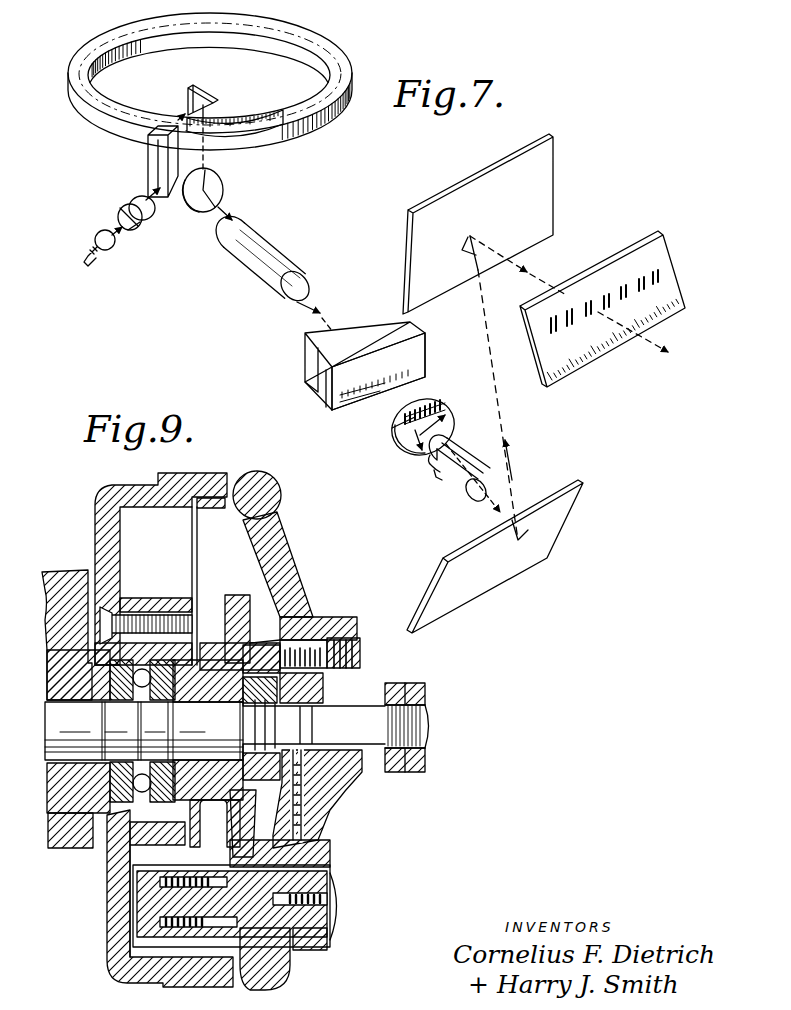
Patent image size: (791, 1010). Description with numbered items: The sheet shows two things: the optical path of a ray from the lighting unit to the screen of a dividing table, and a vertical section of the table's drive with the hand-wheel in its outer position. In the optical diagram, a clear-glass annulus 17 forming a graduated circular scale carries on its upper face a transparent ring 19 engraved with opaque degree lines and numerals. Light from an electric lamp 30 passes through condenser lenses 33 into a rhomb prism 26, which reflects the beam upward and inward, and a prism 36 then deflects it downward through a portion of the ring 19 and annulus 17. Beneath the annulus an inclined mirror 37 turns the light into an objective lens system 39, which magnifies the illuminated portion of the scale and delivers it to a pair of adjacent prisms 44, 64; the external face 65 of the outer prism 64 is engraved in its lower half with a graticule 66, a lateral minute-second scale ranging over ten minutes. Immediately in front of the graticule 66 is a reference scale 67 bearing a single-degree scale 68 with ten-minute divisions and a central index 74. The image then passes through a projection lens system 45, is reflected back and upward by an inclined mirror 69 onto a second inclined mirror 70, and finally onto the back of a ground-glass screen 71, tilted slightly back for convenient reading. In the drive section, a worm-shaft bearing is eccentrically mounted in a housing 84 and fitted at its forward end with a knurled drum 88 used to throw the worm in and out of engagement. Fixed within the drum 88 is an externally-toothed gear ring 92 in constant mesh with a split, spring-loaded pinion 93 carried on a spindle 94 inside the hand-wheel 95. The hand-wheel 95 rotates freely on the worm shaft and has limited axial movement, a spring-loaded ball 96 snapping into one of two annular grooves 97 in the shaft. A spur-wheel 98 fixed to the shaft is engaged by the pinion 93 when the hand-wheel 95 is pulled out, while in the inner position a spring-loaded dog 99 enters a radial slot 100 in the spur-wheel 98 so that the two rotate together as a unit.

In FIG. 7, the clear-glass annulus 17 is at (293, 130).
In FIG. 7, the transparent ring 19 is at (238, 120).
In FIG. 7, the rhomb prism 26 is at (148, 162).
In FIG. 7, the electric lamp 30 is at (106, 253).
In FIG. 7, the condenser lenses 33 is at (135, 232).
In FIG. 7, the prism 36 is at (190, 98).
In FIG. 7, the inclined mirror 37 is at (190, 212).
In FIG. 7, the objective lens system 39 is at (254, 272).
In FIG. 7, the prism 44 is at (305, 372).
In FIG. 7, the projection lens system 45 is at (445, 482).
In FIG. 7, the outer prism 64 is at (348, 395).
In FIG. 7, the external face 65 is at (335, 385).
In FIG. 7, the graticule 66 is at (360, 403).
In FIG. 7, the reference scale 67 is at (430, 402).
In FIG. 7, the single-degree scale 68 is at (449, 420).
In FIG. 7, the inclined mirror 69 is at (435, 583).
In FIG. 7, the second inclined mirror 70 is at (418, 245).
In FIG. 7, the ground-glass screen 71 is at (597, 280).
In FIG. 7, the central index 74 is at (415, 440).
In FIG. 9, the housing 84 is at (75, 848).
In FIG. 9, the knurled drum 88 is at (175, 480).
In FIG. 9, the externally-toothed gear ring 92 is at (108, 895).
In FIG. 9, the pinion 93 is at (300, 845).
In FIG. 9, the spindle 94 is at (295, 950).
In FIG. 9, the hand-wheel 95 is at (290, 560).
In FIG. 9, the spring-loaded ball 96 is at (320, 760).
In FIG. 9, the annular grooves 97 is at (345, 672).
In FIG. 9, the spur-wheel 98 is at (233, 600).
In FIG. 9, the spring-loaded dog 99 is at (258, 660).
In FIG. 9, the radial slot 100 is at (255, 645).